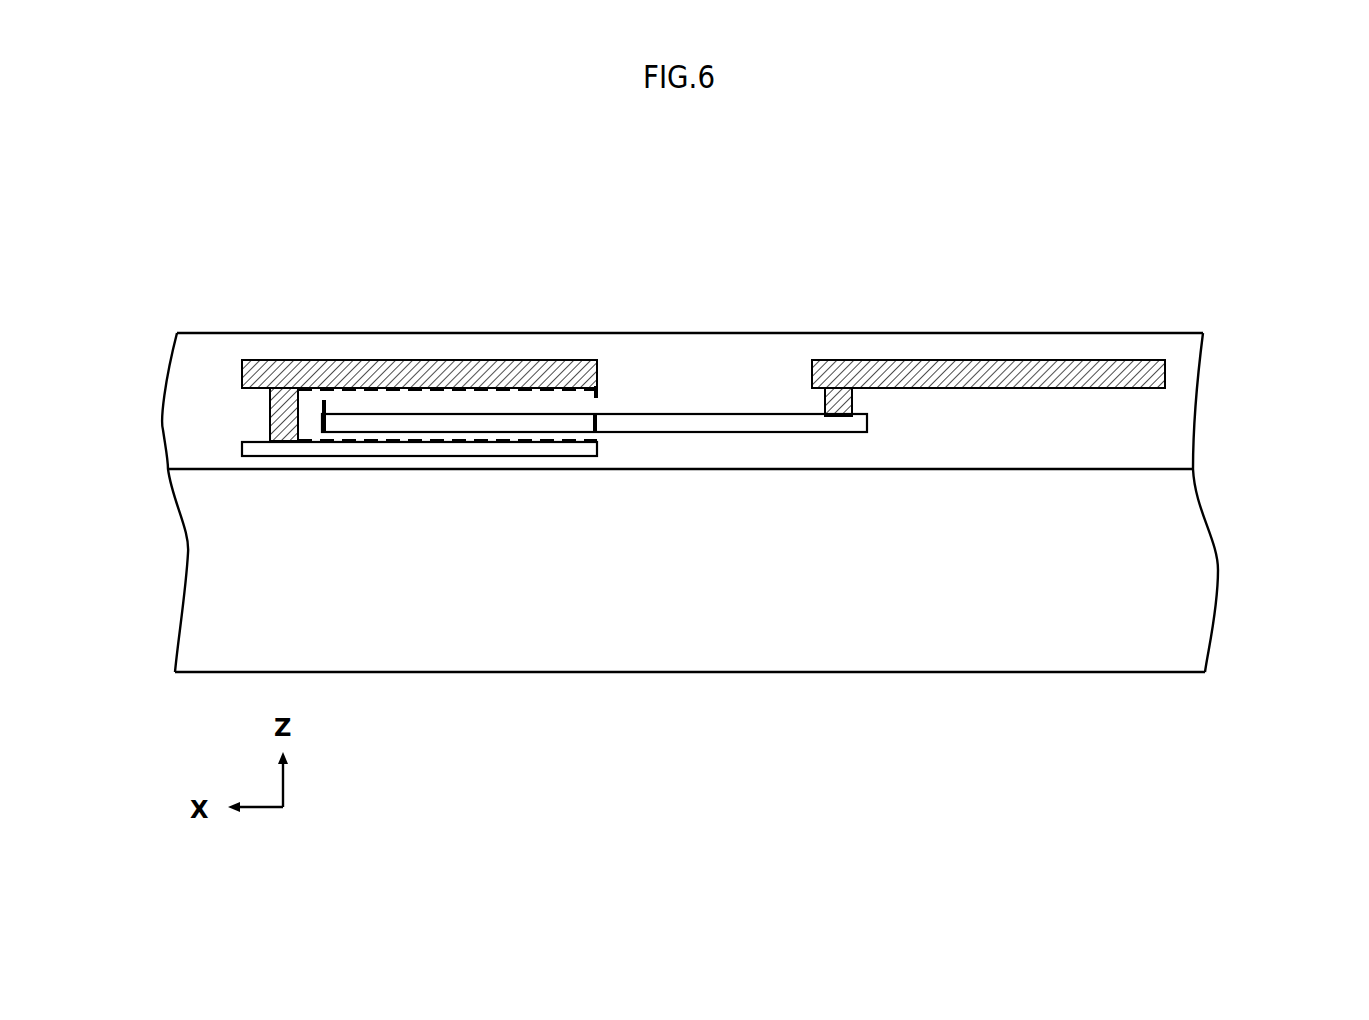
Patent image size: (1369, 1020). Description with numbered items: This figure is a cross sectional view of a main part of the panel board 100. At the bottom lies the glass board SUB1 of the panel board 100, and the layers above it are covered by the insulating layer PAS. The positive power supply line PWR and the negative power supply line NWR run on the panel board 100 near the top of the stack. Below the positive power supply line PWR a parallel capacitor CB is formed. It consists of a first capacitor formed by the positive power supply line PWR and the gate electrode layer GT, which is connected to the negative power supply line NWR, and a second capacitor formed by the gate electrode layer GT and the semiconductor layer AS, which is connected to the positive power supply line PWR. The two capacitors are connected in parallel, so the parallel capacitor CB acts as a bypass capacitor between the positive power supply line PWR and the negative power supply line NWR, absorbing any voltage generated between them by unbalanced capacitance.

The panel board 100 is at (135, 333).
The positive power supply line PWR is at (457, 360).
The negative power supply line NWR is at (993, 362).
The insulating layer PAS is at (1138, 425).
The glass board SUB1 is at (1180, 553).
The parallel capacitor CB is at (343, 441).
The semiconductor layer AS is at (510, 457).
The gate electrode layer GT is at (723, 432).